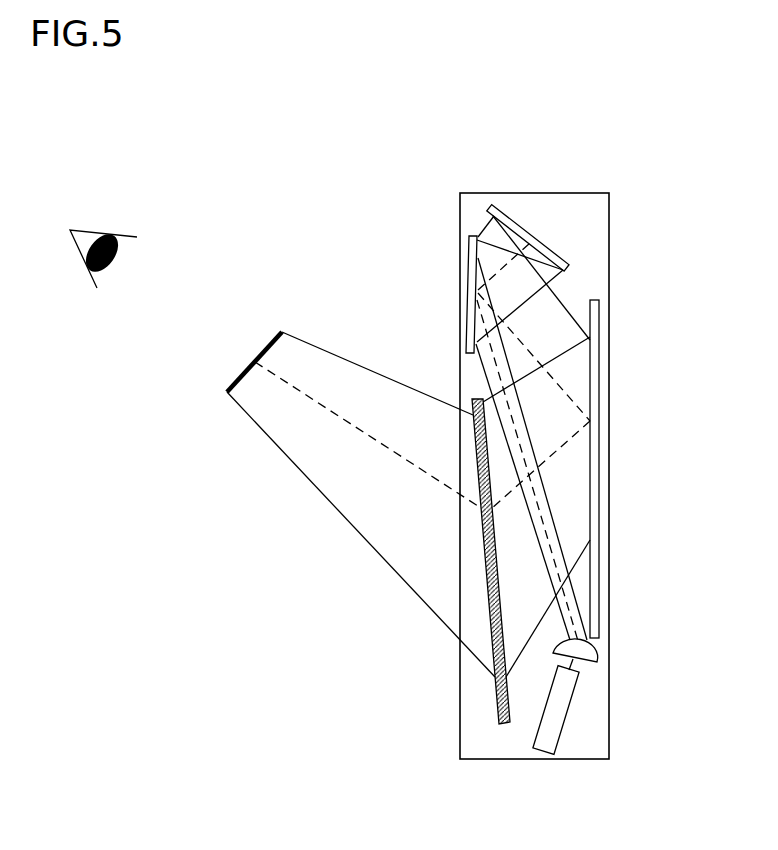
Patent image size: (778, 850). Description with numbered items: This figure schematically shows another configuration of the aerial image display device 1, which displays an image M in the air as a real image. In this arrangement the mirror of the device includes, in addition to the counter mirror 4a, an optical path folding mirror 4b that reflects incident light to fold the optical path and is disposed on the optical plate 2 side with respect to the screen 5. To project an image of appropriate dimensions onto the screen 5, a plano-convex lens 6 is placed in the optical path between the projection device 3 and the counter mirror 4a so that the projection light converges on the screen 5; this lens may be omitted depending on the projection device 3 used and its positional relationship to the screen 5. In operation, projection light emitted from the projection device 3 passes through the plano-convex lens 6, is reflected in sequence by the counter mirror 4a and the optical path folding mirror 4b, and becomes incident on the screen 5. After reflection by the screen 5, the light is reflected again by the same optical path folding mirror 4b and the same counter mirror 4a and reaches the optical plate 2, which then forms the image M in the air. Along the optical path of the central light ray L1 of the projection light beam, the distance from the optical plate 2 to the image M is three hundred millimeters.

The aerial image display device 1 is at (587, 193).
The optical plate 2 is at (497, 725).
The projection device 3 is at (565, 722).
The counter mirror 4a is at (597, 434).
The optical path folding mirror 4b is at (468, 300).
The screen 5 is at (527, 222).
The plano-convex lens 6 is at (585, 652).
The image M is at (258, 352).
The central light ray L1 is at (514, 336).